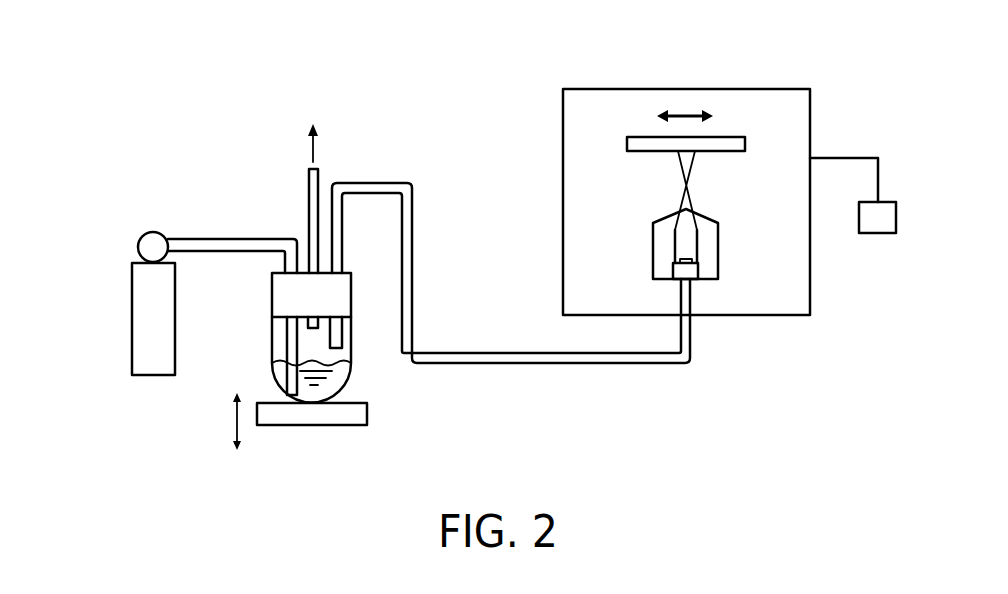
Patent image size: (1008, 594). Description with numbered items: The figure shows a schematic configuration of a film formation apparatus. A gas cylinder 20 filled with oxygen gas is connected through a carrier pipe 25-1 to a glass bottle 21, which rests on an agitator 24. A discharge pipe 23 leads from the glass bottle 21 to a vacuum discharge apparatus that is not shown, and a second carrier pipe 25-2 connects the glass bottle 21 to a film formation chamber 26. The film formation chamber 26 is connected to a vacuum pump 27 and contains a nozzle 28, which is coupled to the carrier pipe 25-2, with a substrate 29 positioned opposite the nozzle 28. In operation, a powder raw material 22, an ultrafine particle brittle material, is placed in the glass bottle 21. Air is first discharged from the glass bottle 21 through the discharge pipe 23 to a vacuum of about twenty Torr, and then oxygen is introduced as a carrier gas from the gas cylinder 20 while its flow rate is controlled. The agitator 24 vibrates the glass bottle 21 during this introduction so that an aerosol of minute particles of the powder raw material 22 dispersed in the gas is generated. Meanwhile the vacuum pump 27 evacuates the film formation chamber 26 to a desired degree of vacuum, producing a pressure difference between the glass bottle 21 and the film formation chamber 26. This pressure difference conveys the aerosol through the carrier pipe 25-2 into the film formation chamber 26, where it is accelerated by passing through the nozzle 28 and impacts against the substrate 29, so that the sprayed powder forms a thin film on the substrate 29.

The gas cylinder 20 is at (132, 268).
The carrier pipe 25-1 is at (203, 239).
The discharge pipe 23 is at (303, 247).
The carrier pipe 25-2 is at (375, 183).
The glass bottle 21 is at (272, 338).
The powder raw material 22 is at (342, 378).
The agitator 24 is at (340, 425).
The film formation chamber 26 is at (810, 110).
The substrate 29 is at (640, 137).
The nozzle 28 is at (713, 265).
The vacuum pump 27 is at (873, 235).